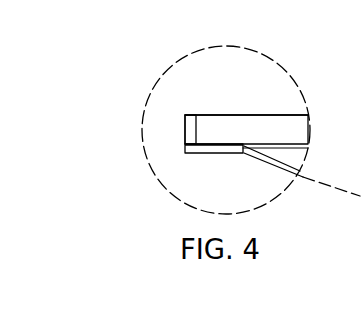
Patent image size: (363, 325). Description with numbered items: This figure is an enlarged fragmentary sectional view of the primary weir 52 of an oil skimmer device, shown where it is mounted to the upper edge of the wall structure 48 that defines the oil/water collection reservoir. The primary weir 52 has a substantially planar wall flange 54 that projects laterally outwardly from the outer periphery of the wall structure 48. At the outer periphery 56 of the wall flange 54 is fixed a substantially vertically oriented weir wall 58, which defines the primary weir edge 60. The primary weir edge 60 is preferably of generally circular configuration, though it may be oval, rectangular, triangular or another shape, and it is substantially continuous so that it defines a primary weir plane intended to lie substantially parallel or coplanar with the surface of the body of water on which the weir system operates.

The primary weir 52 is at (263, 110).
The primary weir edge 60 is at (192, 115).
The weir wall 58 is at (185, 118).
The outer periphery 56 is at (185, 148).
The wall flange 54 is at (213, 153).
The wall structure 48 is at (257, 157).